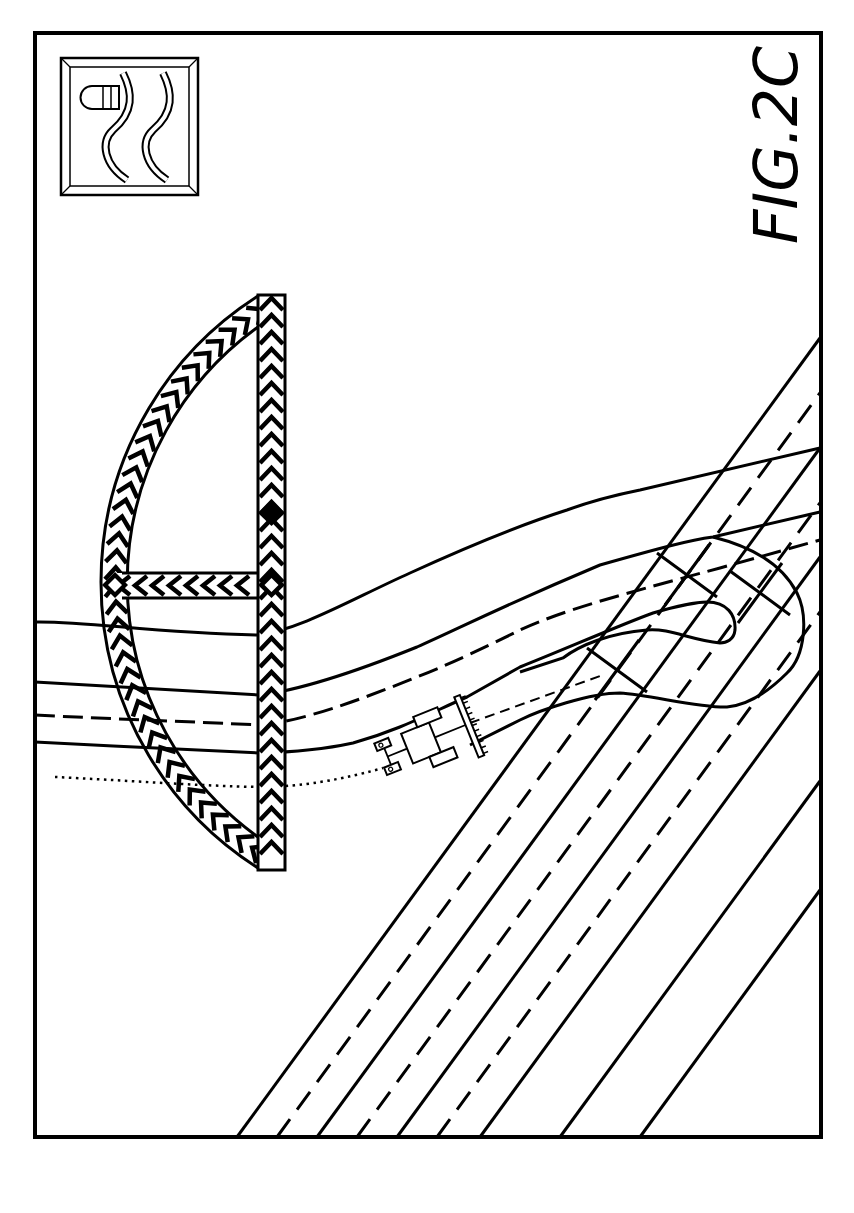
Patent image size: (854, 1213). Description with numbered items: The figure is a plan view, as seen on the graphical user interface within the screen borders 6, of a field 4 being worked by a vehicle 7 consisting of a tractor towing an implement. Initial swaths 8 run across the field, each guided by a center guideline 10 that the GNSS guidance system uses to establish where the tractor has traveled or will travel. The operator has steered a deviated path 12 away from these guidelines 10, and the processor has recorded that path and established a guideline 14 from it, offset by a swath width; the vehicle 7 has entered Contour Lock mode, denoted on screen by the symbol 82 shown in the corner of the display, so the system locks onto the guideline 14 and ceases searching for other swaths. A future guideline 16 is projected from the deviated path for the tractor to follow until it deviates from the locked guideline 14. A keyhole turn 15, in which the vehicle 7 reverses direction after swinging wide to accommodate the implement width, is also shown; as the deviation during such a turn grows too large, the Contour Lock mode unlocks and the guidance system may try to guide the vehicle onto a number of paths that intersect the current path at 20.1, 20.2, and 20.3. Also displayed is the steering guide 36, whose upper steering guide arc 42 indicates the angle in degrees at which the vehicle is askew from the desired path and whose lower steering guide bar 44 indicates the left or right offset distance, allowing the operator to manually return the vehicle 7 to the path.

The field 4 is at (358, 262).
The screen borders 6 is at (92, 1137).
The vehicle 7 is at (404, 798).
The swaths 8 is at (645, 1000).
The center guideline 10 is at (412, 1062).
The deviated path 12 is at (423, 590).
The guideline 14 is at (517, 705).
The keyhole turn 15 is at (677, 583).
The future guideline 16 is at (328, 783).
The intersecting path 20.1 is at (685, 572).
The intersecting path 20.2 is at (768, 588).
The intersecting path 20.3 is at (617, 674).
The steering guide 36 is at (194, 582).
The upper steering guide arc 42 is at (117, 508).
The lower steering guide bar 44 is at (280, 500).
The Contour Lock mode symbol 82 is at (129, 126).